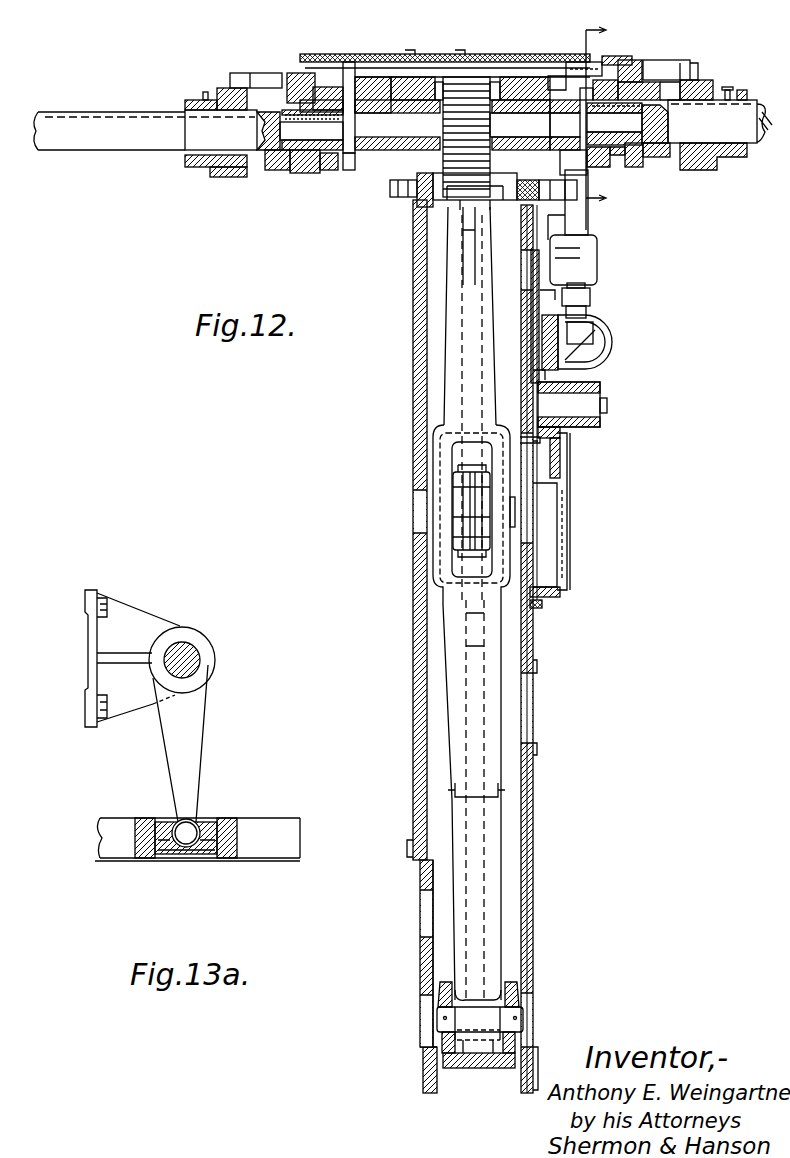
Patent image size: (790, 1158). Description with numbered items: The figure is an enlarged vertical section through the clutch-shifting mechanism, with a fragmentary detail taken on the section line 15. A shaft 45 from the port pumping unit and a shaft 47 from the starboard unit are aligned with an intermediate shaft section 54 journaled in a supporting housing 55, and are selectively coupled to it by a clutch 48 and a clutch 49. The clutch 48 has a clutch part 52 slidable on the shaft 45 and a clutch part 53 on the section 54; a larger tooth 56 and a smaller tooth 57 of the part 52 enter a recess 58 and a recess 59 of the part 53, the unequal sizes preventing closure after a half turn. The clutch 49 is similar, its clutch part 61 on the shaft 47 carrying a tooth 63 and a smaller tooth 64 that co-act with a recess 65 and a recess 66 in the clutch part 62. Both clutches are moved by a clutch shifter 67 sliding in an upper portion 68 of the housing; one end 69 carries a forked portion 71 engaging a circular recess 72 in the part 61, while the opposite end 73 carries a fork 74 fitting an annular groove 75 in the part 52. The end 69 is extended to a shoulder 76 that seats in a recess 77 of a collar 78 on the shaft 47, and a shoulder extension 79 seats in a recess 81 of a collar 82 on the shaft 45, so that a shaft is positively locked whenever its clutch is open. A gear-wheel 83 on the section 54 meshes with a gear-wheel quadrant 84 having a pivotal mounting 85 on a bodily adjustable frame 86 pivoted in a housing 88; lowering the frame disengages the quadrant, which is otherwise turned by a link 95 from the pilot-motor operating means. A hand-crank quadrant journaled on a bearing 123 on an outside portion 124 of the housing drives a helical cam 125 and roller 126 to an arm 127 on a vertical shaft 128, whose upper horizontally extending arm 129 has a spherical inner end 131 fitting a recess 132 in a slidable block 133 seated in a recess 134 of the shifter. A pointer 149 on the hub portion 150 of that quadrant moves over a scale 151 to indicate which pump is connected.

In FIG. 12, the section line 15 is at (595, 120).
In FIG. 12, the shaft 45 is at (725, 115).
In FIG. 12, the shaft 47 is at (108, 125).
In FIG. 12, the clutch 48 is at (680, 165).
In FIG. 12, the clutch 49 is at (338, 138).
In FIG. 12, the clutch part 52 is at (610, 162).
In FIG. 12, the clutch part 53 is at (580, 163).
In FIG. 12, the intermediate shaft section 54 is at (520, 125).
In FIG. 12, the supporting housing 55 is at (525, 80).
In FIG. 12, the tooth 56 is at (627, 124).
In FIG. 12, the tooth 57 is at (600, 80).
In FIG. 12, the recess 58 is at (565, 125).
In FIG. 12, the recess 59 is at (610, 56).
In FIG. 12, the clutch part 61 is at (330, 170).
In FIG. 12, the clutch part 62 is at (352, 170).
In FIG. 12, the tooth 63 is at (308, 173).
In FIG. 12, the tooth 64 is at (312, 85).
In FIG. 12, the recess 65 is at (348, 170).
In FIG. 12, the recess 66 is at (372, 92).
In FIG. 12, the clutch shifter 67 is at (453, 62).
In FIG. 13A, the clutch shifter 67 is at (265, 828).
In FIG. 12, the upper portion of housing 68 is at (440, 62).
In FIG. 12, the end of clutch shifter 69 is at (294, 78).
In FIG. 12, the forked portion 71 is at (298, 85).
In FIG. 12, the circular recess 72 is at (283, 170).
In FIG. 12, the end of clutch shifter 73 is at (640, 78).
In FIG. 12, the fork 74 is at (655, 75).
In FIG. 12, the annular groove 75 is at (640, 160).
In FIG. 12, the shoulder 76 is at (248, 75).
In FIG. 12, the recess 77 is at (230, 79).
In FIG. 12, the collar 78 is at (207, 167).
In FIG. 12, the shoulder extension 79 is at (690, 66).
In FIG. 12, the recess 81 is at (700, 70).
In FIG. 12, the collar 82 is at (728, 160).
In FIG. 12, the gear-wheel 83 is at (470, 85).
In FIG. 12, the gear-wheel quadrant 84 is at (455, 275).
In FIG. 12, the pivotal mounting 85 is at (523, 985).
In FIG. 12, the bodily adjustable frame 86 is at (515, 1000).
In FIG. 12, the housing 88 is at (423, 963).
In FIG. 12, the link 95 is at (460, 490).
In FIG. 12, the bearing 123 is at (605, 394).
In FIG. 12, the outside portion of housing 124 is at (600, 355).
In FIG. 12, the helical cam 125 is at (612, 333).
In FIG. 12, the roller 126 is at (588, 312).
In FIG. 12, the arm 127 is at (592, 295).
In FIG. 12, the vertical shaft 128 is at (590, 225).
In FIG. 13A, the vertical shaft 128 is at (186, 656).
In FIG. 13A, the horizontally extending arm 129 is at (198, 742).
In FIG. 13A, the inner end of arm 131 is at (205, 862).
In FIG. 13A, the recess 132 is at (185, 862).
In FIG. 12, the slidable block 133 is at (576, 65).
In FIG. 13A, the slidable block 133 is at (162, 862).
In FIG. 13A, the recess 134 is at (225, 862).
In FIG. 12, the pointer 149 is at (572, 578).
In FIG. 12, the hub portion 150 is at (590, 430).
In FIG. 12, the scale 151 is at (568, 594).